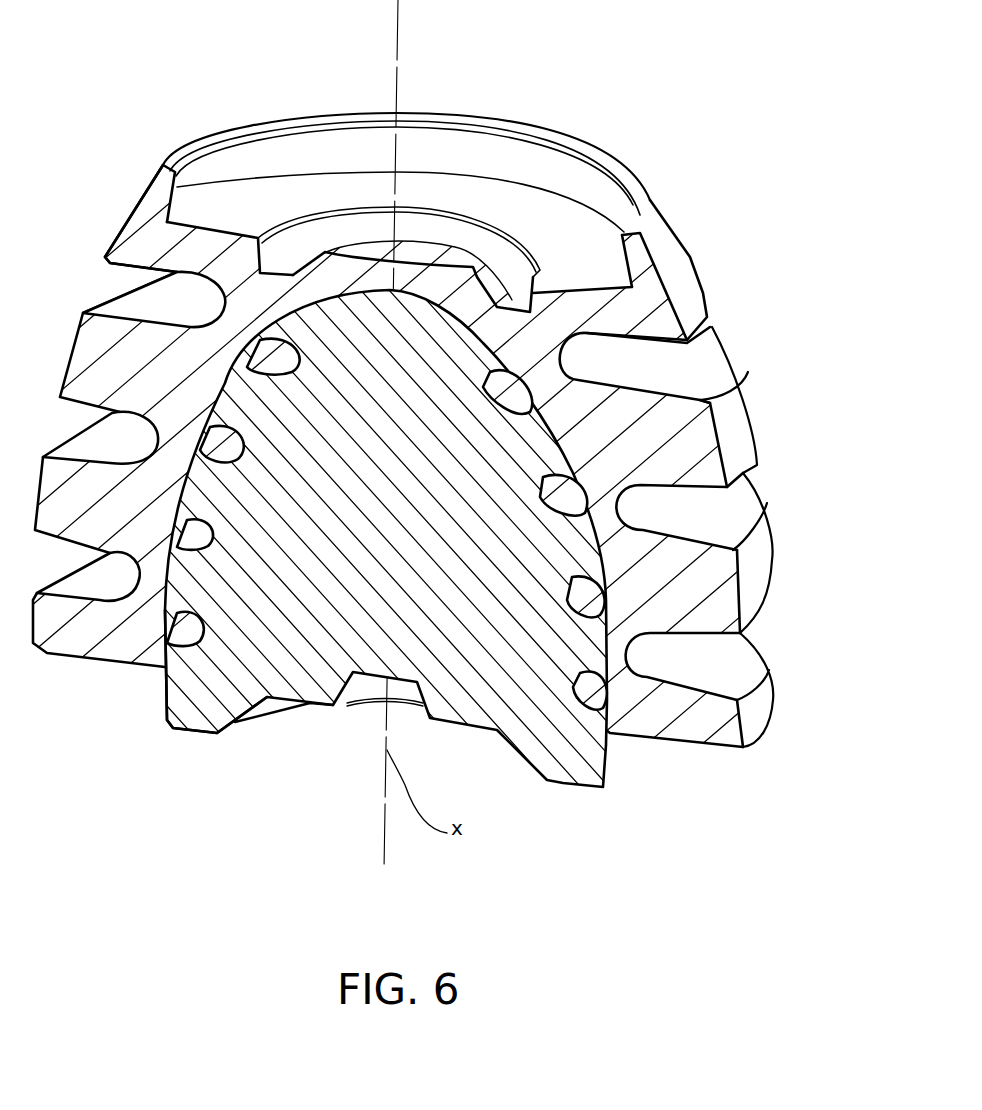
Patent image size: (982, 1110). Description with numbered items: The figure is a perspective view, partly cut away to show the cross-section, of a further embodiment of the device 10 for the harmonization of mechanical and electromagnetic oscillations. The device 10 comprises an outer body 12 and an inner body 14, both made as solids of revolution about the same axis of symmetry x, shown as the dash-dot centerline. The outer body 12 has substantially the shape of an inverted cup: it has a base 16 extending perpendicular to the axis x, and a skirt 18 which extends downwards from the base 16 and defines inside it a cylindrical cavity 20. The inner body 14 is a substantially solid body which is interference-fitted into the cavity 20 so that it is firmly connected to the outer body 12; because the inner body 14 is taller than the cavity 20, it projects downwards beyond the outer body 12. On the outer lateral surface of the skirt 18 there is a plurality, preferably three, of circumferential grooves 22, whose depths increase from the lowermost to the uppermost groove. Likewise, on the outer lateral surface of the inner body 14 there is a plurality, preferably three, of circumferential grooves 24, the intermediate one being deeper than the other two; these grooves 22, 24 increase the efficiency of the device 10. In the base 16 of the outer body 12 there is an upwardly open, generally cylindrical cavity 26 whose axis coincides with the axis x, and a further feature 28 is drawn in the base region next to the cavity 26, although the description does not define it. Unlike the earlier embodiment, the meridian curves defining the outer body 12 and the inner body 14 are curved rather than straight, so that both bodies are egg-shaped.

The device for the harmonization of mechanical and electromagnetic oscillations 10 is at (688, 246).
The outer body 12 is at (78, 357).
The inner body 14 is at (200, 700).
The base 16 is at (217, 243).
The skirt 18 is at (690, 603).
The cylindrical cavity 20 is at (195, 490).
The circumferential grooves 22 is at (600, 363).
The circumferential grooves 24 is at (560, 493).
The cavity 26 is at (177, 187).
The step 28 is at (530, 293).